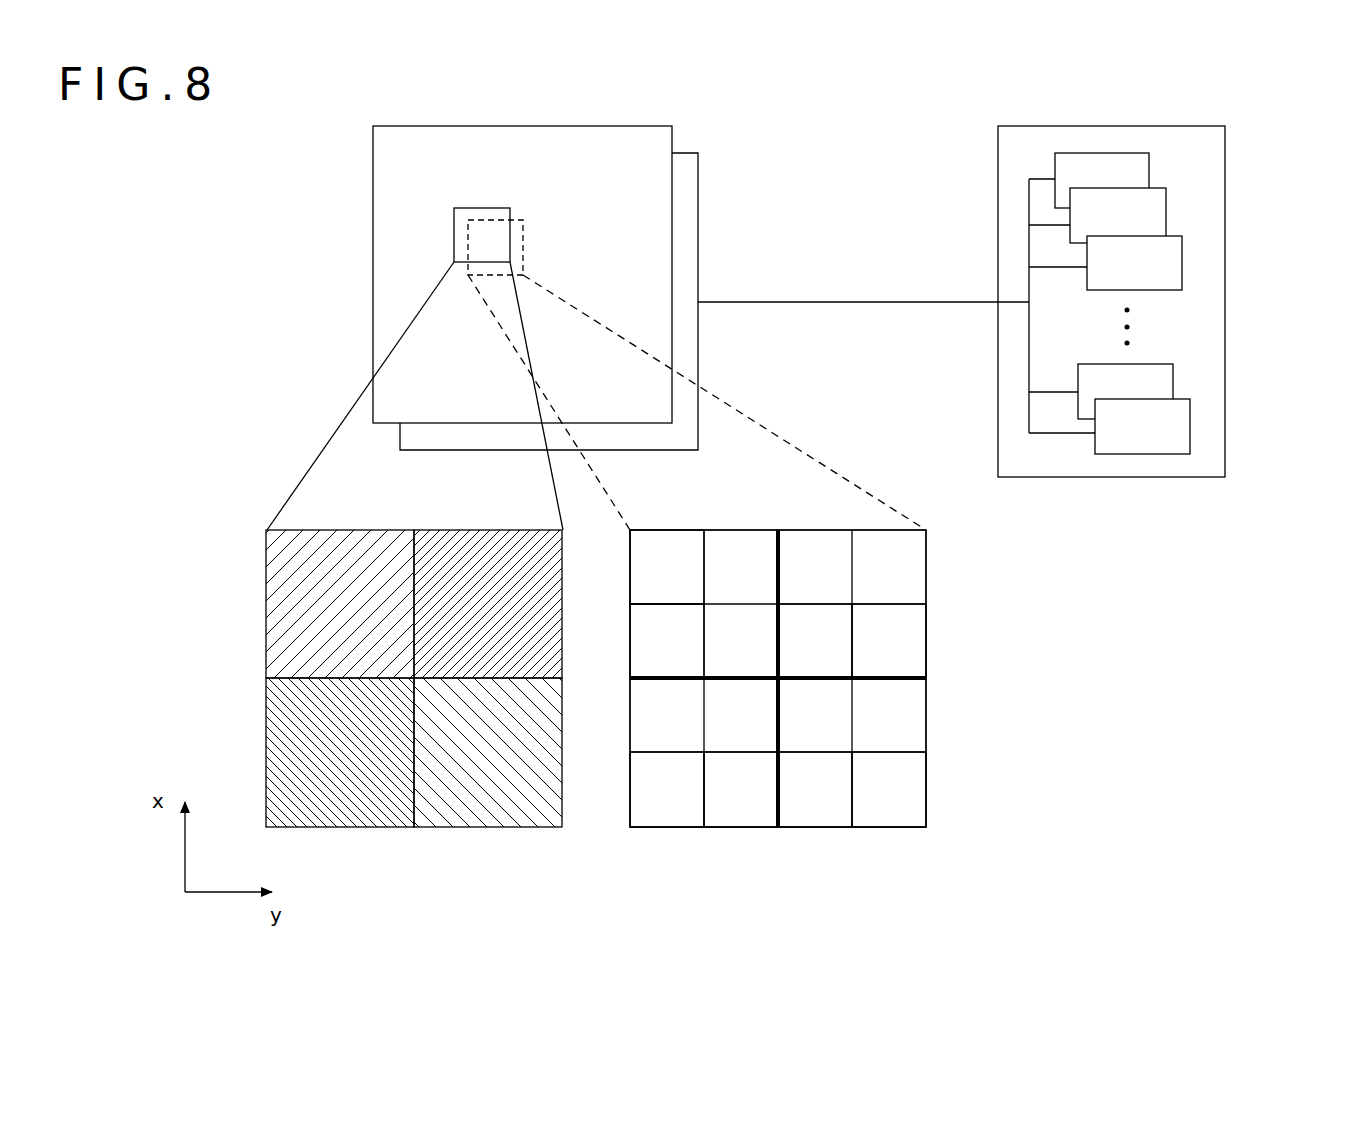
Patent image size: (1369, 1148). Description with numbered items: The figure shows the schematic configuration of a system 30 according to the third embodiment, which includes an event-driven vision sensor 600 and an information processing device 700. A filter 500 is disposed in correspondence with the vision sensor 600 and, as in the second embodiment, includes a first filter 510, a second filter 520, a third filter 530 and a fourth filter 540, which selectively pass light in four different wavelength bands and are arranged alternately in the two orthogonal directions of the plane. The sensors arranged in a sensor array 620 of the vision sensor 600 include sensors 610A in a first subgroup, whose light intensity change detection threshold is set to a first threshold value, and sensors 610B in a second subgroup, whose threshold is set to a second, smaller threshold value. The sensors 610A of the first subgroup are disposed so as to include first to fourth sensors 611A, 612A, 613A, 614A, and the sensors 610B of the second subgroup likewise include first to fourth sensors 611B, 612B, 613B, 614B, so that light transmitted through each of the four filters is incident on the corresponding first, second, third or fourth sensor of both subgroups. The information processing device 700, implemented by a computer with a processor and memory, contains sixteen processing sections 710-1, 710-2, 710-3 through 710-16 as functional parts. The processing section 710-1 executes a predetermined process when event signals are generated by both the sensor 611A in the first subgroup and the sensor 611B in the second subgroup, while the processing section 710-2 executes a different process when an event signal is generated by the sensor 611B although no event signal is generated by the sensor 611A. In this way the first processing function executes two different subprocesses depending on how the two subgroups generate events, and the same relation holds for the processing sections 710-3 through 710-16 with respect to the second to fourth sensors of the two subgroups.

The system 30 is at (883, 155).
The filter 500 is at (373, 220).
The vision sensor 600 is at (698, 233).
The sensor array 620 is at (685, 278).
The first filter 510 is at (326, 650).
The second filter 520 is at (474, 650).
The third filter 530 is at (326, 792).
The fourth filter 540 is at (474, 792).
The sensors in first subgroup 610A is at (1057, 545).
The first sensor in first subgroup 611A is at (668, 570).
The second sensor in first subgroup 612A is at (892, 642).
The third sensor in first subgroup 613A is at (743, 788).
The fourth sensor in first subgroup 614A is at (892, 785).
The sensors in second subgroup 610B is at (807, 880).
The first sensor in second subgroup 611B is at (665, 647).
The second sensor in second subgroup 612B is at (813, 647).
The third sensor in second subgroup 613B is at (667, 793).
The fourth sensor in second subgroup 614B is at (813, 793).
The information processing device 700 is at (1225, 137).
The processing section 710-1 is at (1149, 170).
The processing section 710-2 is at (1166, 224).
The processing section 710-3 is at (1182, 270).
The processing section 710-16 is at (1190, 424).